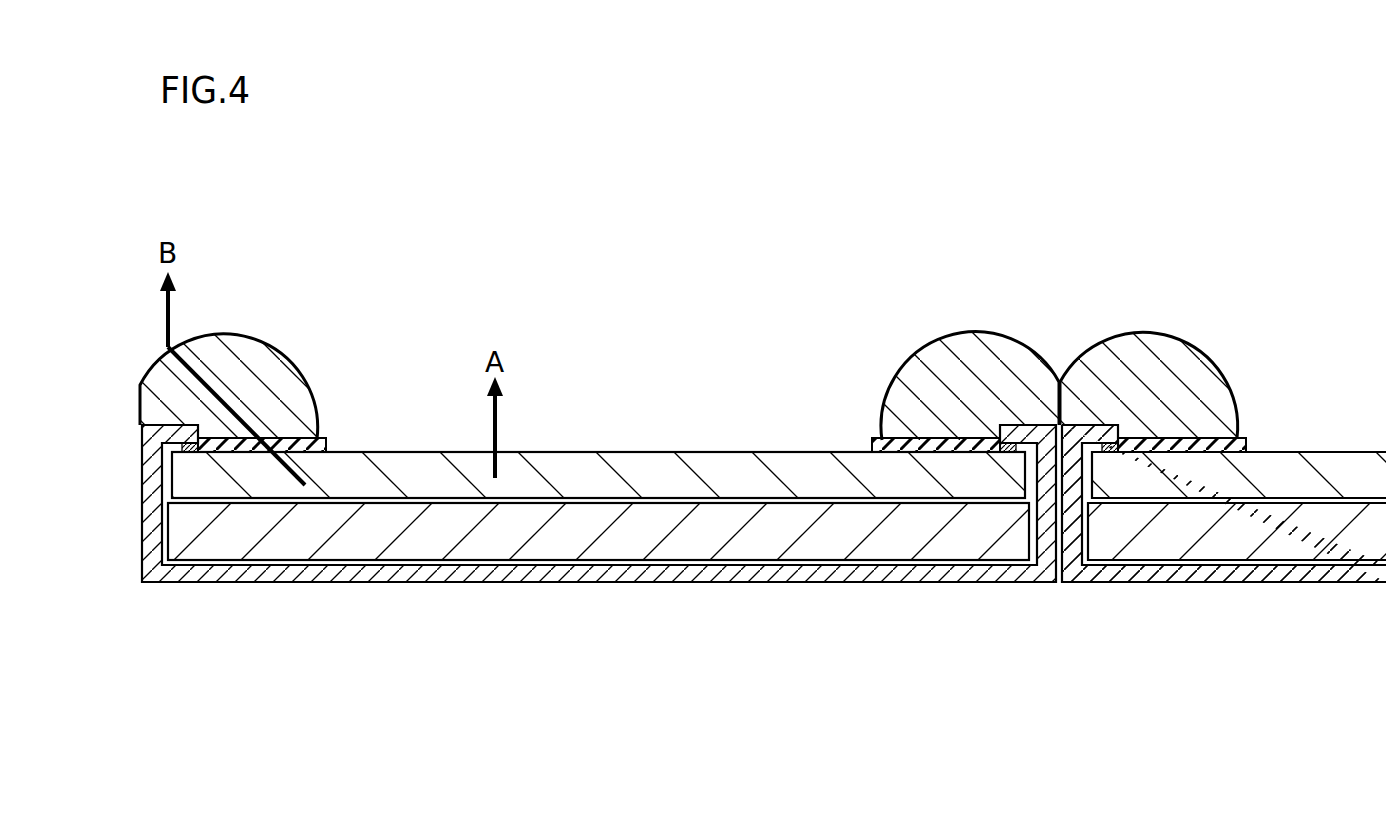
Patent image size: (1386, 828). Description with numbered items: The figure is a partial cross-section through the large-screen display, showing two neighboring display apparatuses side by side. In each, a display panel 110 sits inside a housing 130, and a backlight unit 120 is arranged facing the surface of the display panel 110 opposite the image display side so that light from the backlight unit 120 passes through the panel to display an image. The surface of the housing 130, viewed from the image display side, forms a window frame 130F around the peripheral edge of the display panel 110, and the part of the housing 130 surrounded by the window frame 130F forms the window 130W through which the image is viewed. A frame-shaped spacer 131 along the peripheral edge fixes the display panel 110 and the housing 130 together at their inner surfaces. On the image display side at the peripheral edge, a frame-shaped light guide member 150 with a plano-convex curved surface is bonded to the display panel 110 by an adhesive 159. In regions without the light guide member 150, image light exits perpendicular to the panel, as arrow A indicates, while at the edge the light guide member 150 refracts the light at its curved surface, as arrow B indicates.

The display panel 110 is at (708, 458).
The backlight unit 120 is at (583, 527).
The housing 130 is at (813, 573).
The window frame 130F is at (178, 432).
The window 130W is at (1000, 425).
The spacer 131 is at (1014, 447).
The light guide member 150 is at (275, 378).
The adhesive 159 is at (327, 443).